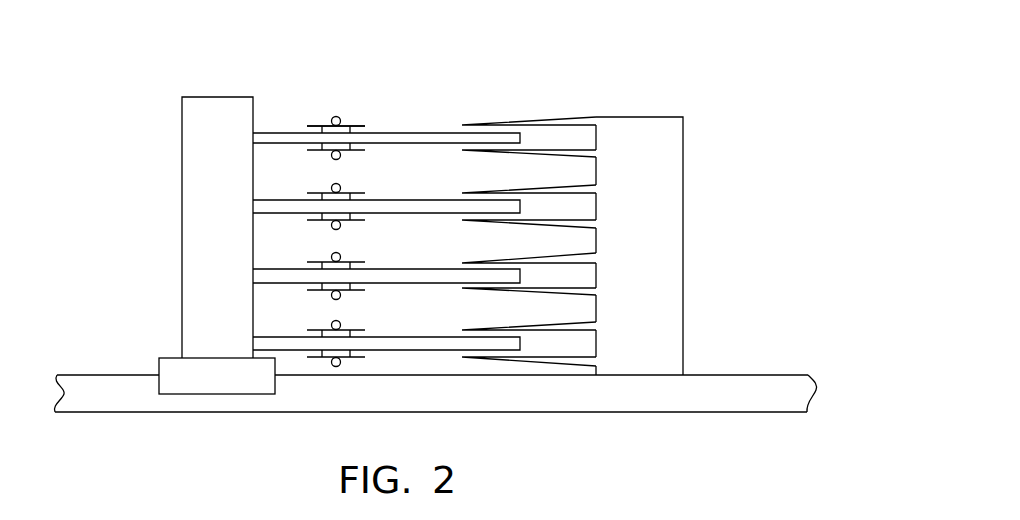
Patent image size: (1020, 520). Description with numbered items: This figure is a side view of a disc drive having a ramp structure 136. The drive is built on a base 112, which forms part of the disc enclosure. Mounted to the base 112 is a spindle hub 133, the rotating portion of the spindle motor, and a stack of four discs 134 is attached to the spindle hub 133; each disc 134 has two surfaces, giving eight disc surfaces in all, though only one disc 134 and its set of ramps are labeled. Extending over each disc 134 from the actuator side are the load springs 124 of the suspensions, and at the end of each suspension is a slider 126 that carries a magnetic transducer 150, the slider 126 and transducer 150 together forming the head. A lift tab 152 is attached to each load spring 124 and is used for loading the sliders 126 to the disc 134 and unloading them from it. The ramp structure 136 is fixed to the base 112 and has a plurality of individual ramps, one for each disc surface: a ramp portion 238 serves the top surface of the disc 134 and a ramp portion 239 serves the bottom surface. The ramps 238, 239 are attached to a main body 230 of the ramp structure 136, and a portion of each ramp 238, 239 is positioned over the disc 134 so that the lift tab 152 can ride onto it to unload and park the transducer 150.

The base 112 is at (708, 375).
The load spring 124 is at (355, 151).
The slider 126 is at (345, 124).
The spindle hub 133 is at (172, 358).
The disc 134 is at (423, 131).
The ramp structure 136 is at (700, 82).
The magnetic transducer 150 is at (328, 124).
The lift tab 152 is at (337, 116).
The main body 230 is at (683, 178).
The ramp portion 238 is at (547, 120).
The ramp portion 239 is at (527, 155).